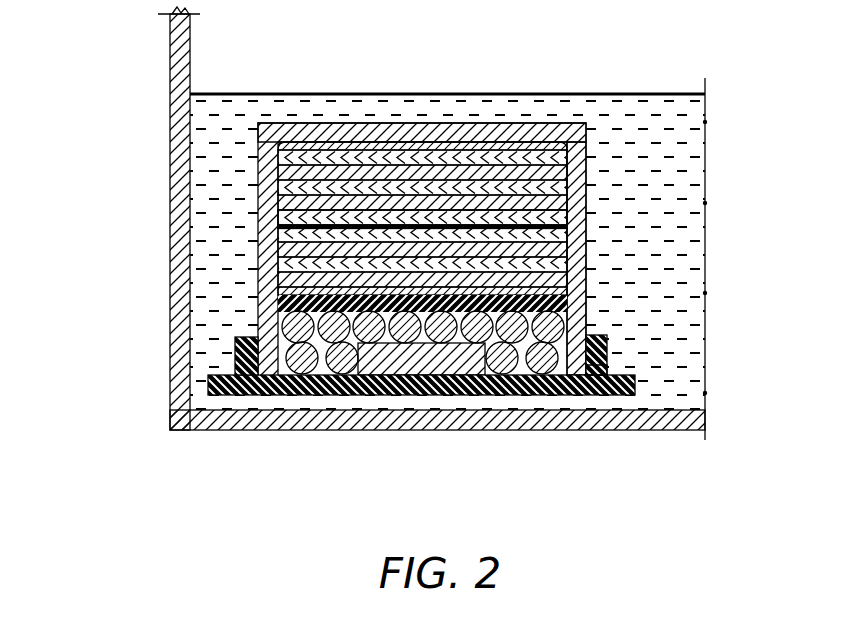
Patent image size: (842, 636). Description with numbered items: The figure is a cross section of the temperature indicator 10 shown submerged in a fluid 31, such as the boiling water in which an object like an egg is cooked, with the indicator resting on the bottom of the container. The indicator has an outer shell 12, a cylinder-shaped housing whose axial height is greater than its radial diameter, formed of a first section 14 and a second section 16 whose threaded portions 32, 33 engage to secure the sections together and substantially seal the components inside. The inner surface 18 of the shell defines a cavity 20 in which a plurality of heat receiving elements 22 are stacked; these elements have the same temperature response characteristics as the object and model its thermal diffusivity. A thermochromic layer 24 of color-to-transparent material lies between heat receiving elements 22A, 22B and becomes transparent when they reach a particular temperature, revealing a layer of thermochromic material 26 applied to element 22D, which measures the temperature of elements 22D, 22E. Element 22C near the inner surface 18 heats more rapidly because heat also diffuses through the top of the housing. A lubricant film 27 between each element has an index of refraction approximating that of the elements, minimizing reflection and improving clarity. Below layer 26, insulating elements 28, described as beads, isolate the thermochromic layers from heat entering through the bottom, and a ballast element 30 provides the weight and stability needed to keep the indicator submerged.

The temperature indicator 10 is at (558, 42).
The outer shell 12 is at (438, 122).
The first section 14 is at (342, 124).
The second section 16 is at (258, 397).
The inner surface 18 is at (567, 142).
The cavity 20 is at (300, 222).
The heat receiving elements 22 is at (432, 179).
The heat receiving element 22A is at (540, 215).
The heat receiving element 22B is at (632, 249).
The heat receiving element 22C is at (520, 160).
The heat receiving element 22D is at (300, 298).
The heat receiving element 22E is at (545, 284).
The thermochromic layer 24 is at (540, 227).
The layer of thermochromic material 26 is at (385, 268).
The lubricant film 27 is at (305, 170).
The insulating elements 28 is at (545, 395).
The ballast element 30 is at (421, 397).
The fluid 31 is at (642, 132).
The threaded portion 32 is at (590, 335).
The threaded portion 33 is at (607, 363).